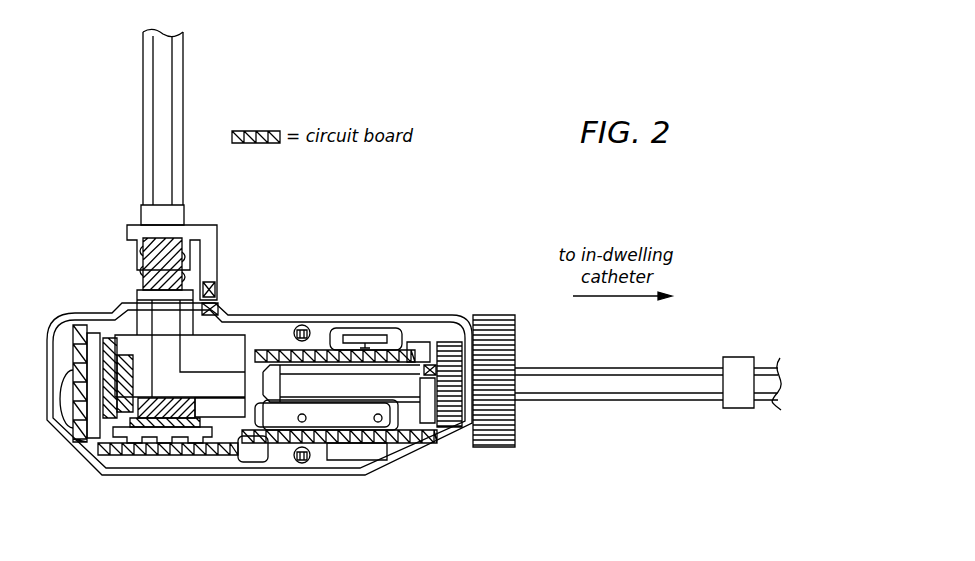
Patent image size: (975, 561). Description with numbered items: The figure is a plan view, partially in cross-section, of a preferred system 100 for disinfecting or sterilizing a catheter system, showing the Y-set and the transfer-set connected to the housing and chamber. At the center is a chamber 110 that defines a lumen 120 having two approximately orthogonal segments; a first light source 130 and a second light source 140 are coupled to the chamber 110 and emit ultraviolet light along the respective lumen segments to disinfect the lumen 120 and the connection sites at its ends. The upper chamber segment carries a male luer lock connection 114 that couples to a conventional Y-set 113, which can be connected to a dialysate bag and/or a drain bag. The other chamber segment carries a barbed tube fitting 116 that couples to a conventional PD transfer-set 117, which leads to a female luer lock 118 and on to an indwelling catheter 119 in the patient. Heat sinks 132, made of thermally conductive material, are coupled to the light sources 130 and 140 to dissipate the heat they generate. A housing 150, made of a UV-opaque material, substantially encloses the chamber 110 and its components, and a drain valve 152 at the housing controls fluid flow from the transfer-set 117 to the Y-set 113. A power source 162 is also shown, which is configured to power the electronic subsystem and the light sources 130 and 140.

The system 100 is at (425, 230).
The Y-set 113 is at (182, 76).
The male luer lock connection 114 is at (142, 280).
The second light source 140 is at (127, 355).
The chamber 110 is at (228, 345).
The lumen 120 is at (152, 368).
The barbed tube fitting 116 is at (272, 376).
The housing 150 is at (382, 317).
The transfer-set 117 is at (403, 372).
The drain valve 152 is at (495, 447).
The female luer lock 118 is at (740, 357).
The indwelling catheter 119 is at (769, 400).
The power source 162 is at (355, 417).
The first light source 130 is at (182, 410).
The heat sinks 132 is at (133, 447).